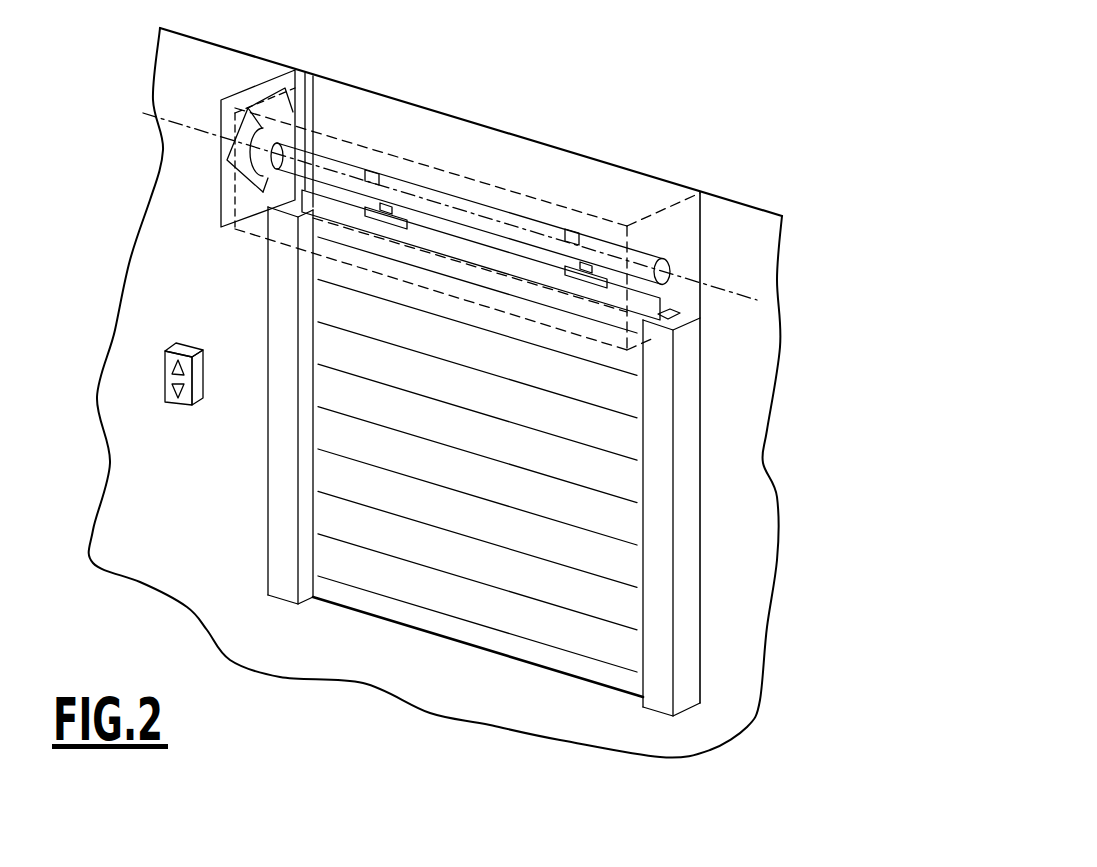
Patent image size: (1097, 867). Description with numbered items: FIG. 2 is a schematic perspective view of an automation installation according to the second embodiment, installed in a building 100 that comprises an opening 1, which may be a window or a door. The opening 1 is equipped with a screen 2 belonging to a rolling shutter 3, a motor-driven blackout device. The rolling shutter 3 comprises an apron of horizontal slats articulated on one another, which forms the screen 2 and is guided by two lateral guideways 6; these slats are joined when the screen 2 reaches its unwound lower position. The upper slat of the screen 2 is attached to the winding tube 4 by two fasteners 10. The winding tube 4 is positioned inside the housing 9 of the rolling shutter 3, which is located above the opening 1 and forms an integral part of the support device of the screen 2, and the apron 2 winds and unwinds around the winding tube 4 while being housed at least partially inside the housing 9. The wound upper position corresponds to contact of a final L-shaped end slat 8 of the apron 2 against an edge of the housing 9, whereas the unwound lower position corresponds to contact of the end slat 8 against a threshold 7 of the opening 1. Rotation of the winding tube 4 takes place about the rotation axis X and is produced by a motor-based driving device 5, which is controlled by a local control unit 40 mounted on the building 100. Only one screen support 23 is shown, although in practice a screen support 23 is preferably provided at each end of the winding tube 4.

The opening 1 is at (479, 491).
The screen 2 is at (460, 600).
The rolling shutter 3 is at (458, 353).
The winding tube 4 is at (480, 198).
The motor-based driving device 5 is at (336, 130).
The lateral guideways 6 is at (280, 567).
The threshold 7 is at (620, 678).
The final L-shaped end slat 8 is at (540, 655).
The housing 9 is at (647, 194).
The fasteners 10 is at (373, 174).
The screen support 23 is at (247, 128).
The control unit 40 is at (178, 407).
The building 100 is at (733, 489).
The rotation axis X is at (730, 292).